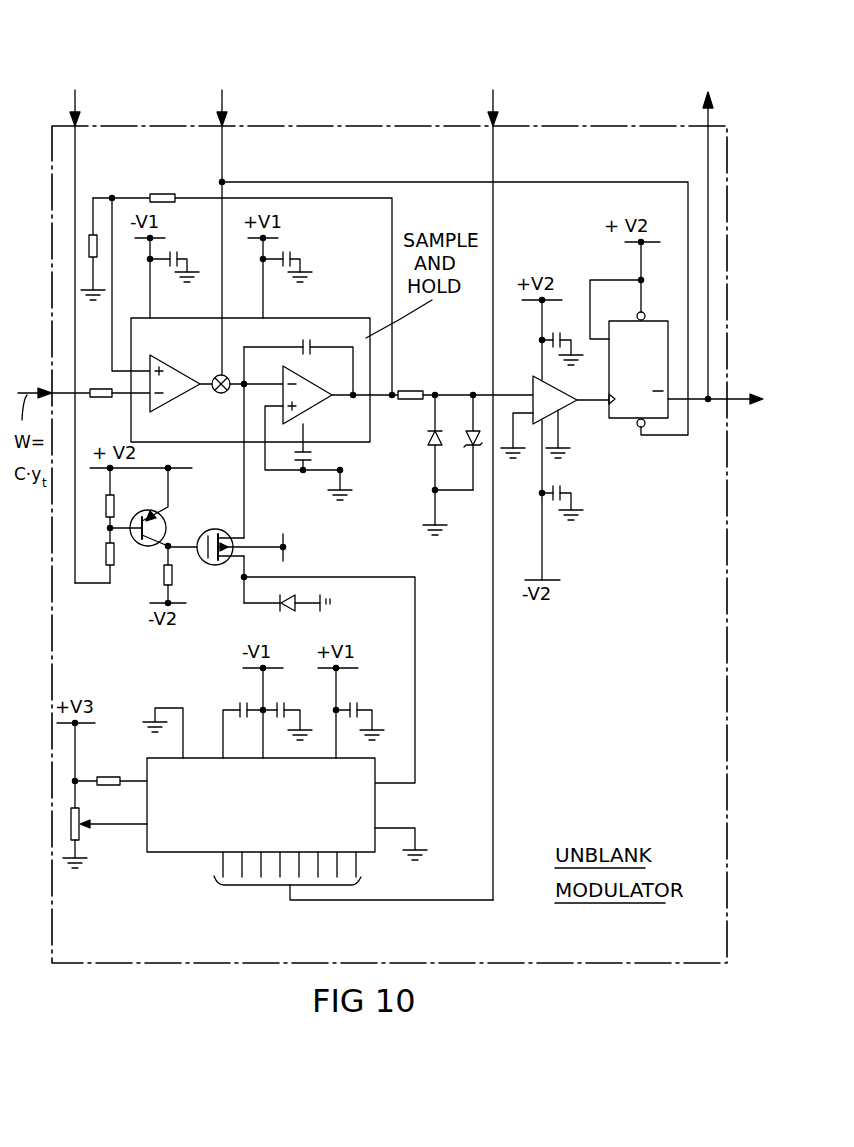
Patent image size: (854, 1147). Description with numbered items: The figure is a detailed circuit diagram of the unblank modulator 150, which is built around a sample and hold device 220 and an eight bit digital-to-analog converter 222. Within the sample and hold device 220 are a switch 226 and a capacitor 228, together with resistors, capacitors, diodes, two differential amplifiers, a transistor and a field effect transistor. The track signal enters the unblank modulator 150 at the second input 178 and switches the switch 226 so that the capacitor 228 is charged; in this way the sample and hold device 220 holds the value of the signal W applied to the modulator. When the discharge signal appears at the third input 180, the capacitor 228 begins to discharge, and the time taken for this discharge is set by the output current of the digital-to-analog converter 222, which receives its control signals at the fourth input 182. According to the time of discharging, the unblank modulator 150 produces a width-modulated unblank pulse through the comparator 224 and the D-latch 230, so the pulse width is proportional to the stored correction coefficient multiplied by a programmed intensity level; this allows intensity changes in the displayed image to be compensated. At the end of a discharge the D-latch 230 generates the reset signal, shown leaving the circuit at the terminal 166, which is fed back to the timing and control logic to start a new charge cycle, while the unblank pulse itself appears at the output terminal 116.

The unblank modulator 150 is at (357, 134).
The third input 180 is at (80, 128).
The second input 178 is at (226, 128).
The fourth input 182 is at (497, 128).
The RS output 166 is at (710, 128).
The sample and hold device 220 is at (235, 318).
The switch 226 is at (221, 394).
The capacitor 228 is at (300, 345).
The comparator 224 is at (536, 390).
The D-latch 230 is at (660, 318).
The digital-to-analog converter 222 is at (357, 800).
The output U_D 116 is at (724, 402).